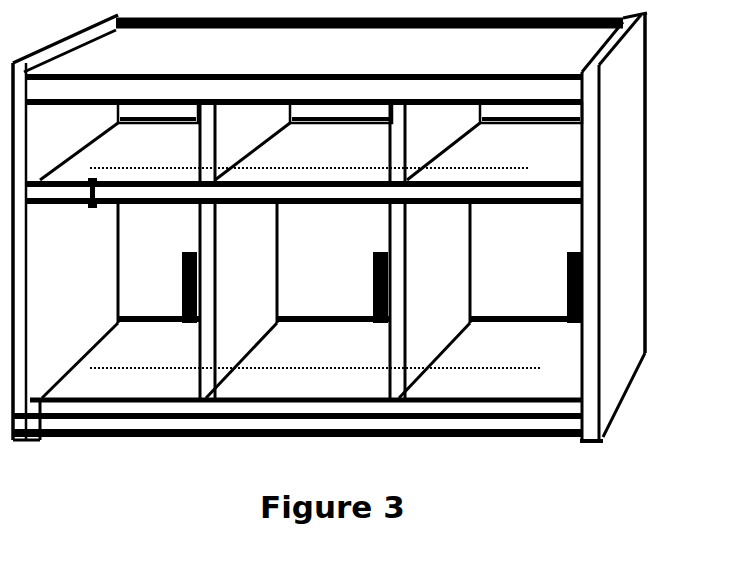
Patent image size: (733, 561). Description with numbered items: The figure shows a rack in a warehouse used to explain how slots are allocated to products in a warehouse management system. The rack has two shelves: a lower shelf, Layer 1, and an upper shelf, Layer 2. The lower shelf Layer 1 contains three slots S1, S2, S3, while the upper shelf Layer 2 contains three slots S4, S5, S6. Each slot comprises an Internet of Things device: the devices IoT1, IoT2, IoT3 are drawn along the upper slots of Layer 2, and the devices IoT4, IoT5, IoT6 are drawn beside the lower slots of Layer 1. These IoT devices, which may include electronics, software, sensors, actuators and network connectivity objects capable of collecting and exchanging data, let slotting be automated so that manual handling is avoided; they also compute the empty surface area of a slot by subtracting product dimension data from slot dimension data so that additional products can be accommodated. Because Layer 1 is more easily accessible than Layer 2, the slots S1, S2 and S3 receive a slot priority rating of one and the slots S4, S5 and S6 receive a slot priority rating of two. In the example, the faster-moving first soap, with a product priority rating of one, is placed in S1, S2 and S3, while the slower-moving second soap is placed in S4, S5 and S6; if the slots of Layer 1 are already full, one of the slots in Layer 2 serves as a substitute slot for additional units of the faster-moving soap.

The Internet of Things (IoT) device IoT1 is at (173, 97).
The Internet of Things (IoT) device IoT2 is at (333, 97).
The Internet of Things (IoT) device IoT3 is at (499, 97).
The Internet of Things (IoT) device IoT4 is at (198, 290).
The Internet of Things (IoT) device IoT5 is at (392, 290).
The Internet of Things (IoT) device IoT6 is at (581, 288).
The slot S1 is at (121, 299).
The slot S2 is at (298, 299).
The slot S3 is at (490, 299).
The slot S4 is at (98, 151).
The slot S5 is at (285, 151).
The slot S6 is at (481, 151).
The layer Layer 1 is at (521, 372).
The layer Layer 2 is at (530, 169).